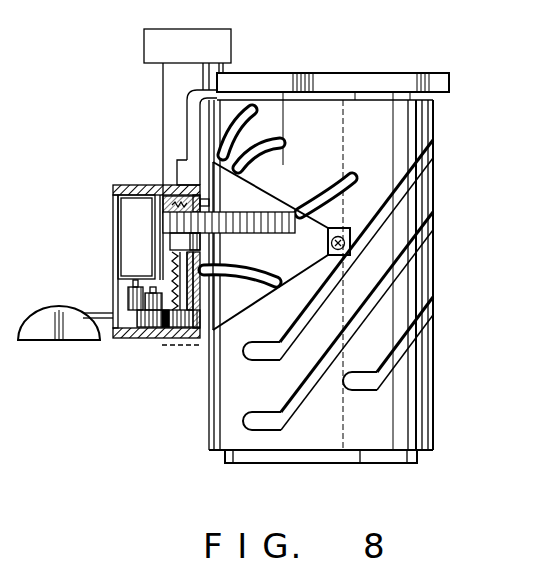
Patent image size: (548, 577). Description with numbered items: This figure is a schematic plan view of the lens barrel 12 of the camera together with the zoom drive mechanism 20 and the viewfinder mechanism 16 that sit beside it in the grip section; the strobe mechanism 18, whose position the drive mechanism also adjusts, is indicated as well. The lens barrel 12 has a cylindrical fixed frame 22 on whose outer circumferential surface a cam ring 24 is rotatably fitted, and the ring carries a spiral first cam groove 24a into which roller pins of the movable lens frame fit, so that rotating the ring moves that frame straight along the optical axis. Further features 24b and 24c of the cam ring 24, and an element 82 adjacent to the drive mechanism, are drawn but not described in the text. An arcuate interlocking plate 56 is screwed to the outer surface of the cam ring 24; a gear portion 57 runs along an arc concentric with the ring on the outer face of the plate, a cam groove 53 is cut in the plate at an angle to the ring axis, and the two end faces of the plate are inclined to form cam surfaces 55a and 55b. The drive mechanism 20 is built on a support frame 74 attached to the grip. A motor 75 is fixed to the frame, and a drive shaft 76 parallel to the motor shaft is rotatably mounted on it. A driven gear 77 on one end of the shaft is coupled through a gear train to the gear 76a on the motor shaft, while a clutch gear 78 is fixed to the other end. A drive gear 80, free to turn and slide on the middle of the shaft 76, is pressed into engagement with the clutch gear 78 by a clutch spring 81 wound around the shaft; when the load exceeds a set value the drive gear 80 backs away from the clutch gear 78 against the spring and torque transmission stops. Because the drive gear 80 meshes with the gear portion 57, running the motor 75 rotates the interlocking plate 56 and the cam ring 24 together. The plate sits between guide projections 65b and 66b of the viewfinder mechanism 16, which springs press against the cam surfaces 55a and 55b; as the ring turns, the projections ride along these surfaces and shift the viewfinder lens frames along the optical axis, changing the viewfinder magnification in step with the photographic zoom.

The lens barrel 12 is at (470, 293).
The viewfinder mechanism 16 is at (145, 53).
The strobe mechanism 18 is at (68, 341).
The zoom drive mechanism 20 is at (126, 174).
The fixed frame 22 is at (385, 463).
The cam ring 24 is at (428, 413).
The first cam groove 24a is at (413, 250).
The guide slot 24b is at (412, 348).
The guide slot 24c is at (407, 188).
The cam groove 53 is at (225, 335).
The cam surface 55a is at (260, 362).
The cam surface 55b is at (287, 207).
The interlocking plate 56 is at (300, 263).
The gear portion 57 is at (300, 210).
The guide projection 65b is at (212, 358).
The guide projection 66b is at (235, 165).
The support frame 74 is at (128, 338).
The motor 75 is at (127, 237).
The drive shaft 76 is at (175, 262).
The gear 76a is at (128, 298).
The driven gear 77 is at (178, 338).
The clutch gear 78 is at (177, 183).
The drive gear 80 is at (163, 222).
The clutch spring 81 is at (172, 270).
The conduit 82 is at (200, 113).